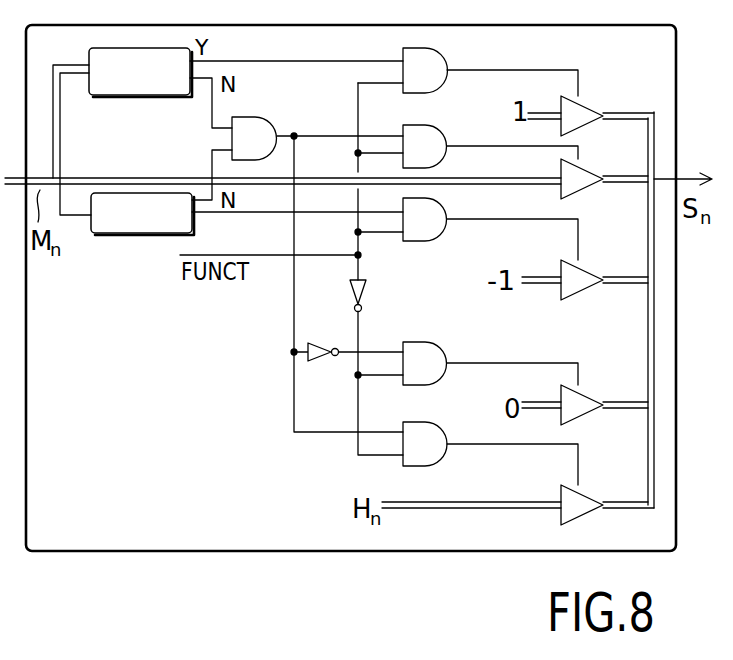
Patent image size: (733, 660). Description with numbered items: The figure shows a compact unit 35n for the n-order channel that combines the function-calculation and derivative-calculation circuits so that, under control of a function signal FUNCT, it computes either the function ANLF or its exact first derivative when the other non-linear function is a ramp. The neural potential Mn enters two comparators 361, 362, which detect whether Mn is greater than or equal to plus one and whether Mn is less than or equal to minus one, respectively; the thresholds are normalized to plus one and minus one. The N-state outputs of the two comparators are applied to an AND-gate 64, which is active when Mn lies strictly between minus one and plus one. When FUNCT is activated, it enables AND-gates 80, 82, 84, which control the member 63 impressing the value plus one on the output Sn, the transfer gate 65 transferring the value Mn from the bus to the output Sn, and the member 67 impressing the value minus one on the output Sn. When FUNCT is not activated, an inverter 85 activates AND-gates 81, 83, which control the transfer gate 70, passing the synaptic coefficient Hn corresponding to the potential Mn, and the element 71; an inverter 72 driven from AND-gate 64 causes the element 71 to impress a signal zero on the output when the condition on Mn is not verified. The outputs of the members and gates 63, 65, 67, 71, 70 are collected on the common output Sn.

The unit 35n is at (28, 284).
The comparator 361 is at (137, 99).
The comparator 362 is at (145, 238).
The AND-gate 64 is at (246, 117).
The AND-gate 80 is at (423, 49).
The AND-gate 82 is at (423, 125).
The AND-gate 84 is at (435, 241).
The AND-gate 81 is at (435, 342).
The AND-gate 83 is at (425, 422).
The inverter 85 is at (367, 292).
The inverter 72 is at (317, 342).
The member 63 is at (585, 95).
The transfer gate 65 is at (583, 199).
The member 67 is at (580, 299).
The element 71 is at (585, 425).
The transfer gate 70 is at (576, 525).